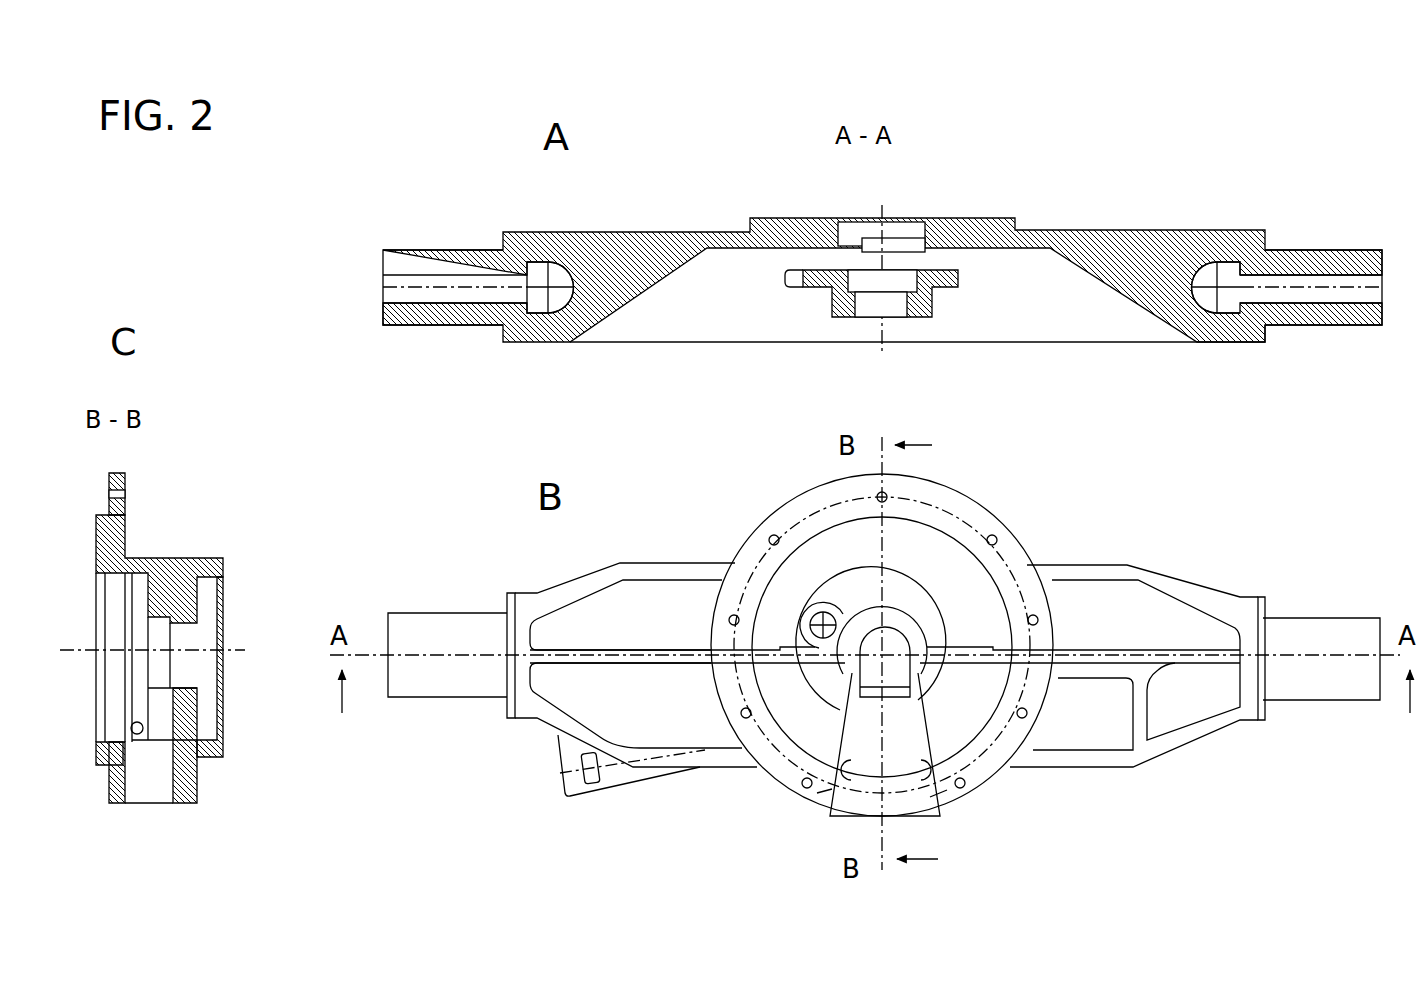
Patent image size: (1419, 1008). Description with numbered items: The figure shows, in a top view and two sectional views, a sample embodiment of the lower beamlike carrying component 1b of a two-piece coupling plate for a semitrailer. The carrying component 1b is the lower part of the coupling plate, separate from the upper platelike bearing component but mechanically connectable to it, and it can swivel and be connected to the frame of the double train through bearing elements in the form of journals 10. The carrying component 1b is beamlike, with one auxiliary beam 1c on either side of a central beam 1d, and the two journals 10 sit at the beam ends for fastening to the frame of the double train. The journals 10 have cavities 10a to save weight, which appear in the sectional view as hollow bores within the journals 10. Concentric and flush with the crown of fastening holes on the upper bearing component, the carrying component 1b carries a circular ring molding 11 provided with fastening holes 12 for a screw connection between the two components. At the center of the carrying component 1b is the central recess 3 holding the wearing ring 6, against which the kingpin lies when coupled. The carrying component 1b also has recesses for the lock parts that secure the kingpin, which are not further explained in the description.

The lower beamlike carrying component 1b is at (1097, 221).
The auxiliary beam 1c is at (1120, 575).
The central beam 1d is at (1230, 325).
The central recess 3 is at (872, 682).
The wearing ring 6 is at (787, 295).
The journal 10 is at (433, 322).
The cavity 10a is at (478, 283).
The circular ring molding 11 is at (125, 537).
The fastening hole 12 is at (1000, 542).